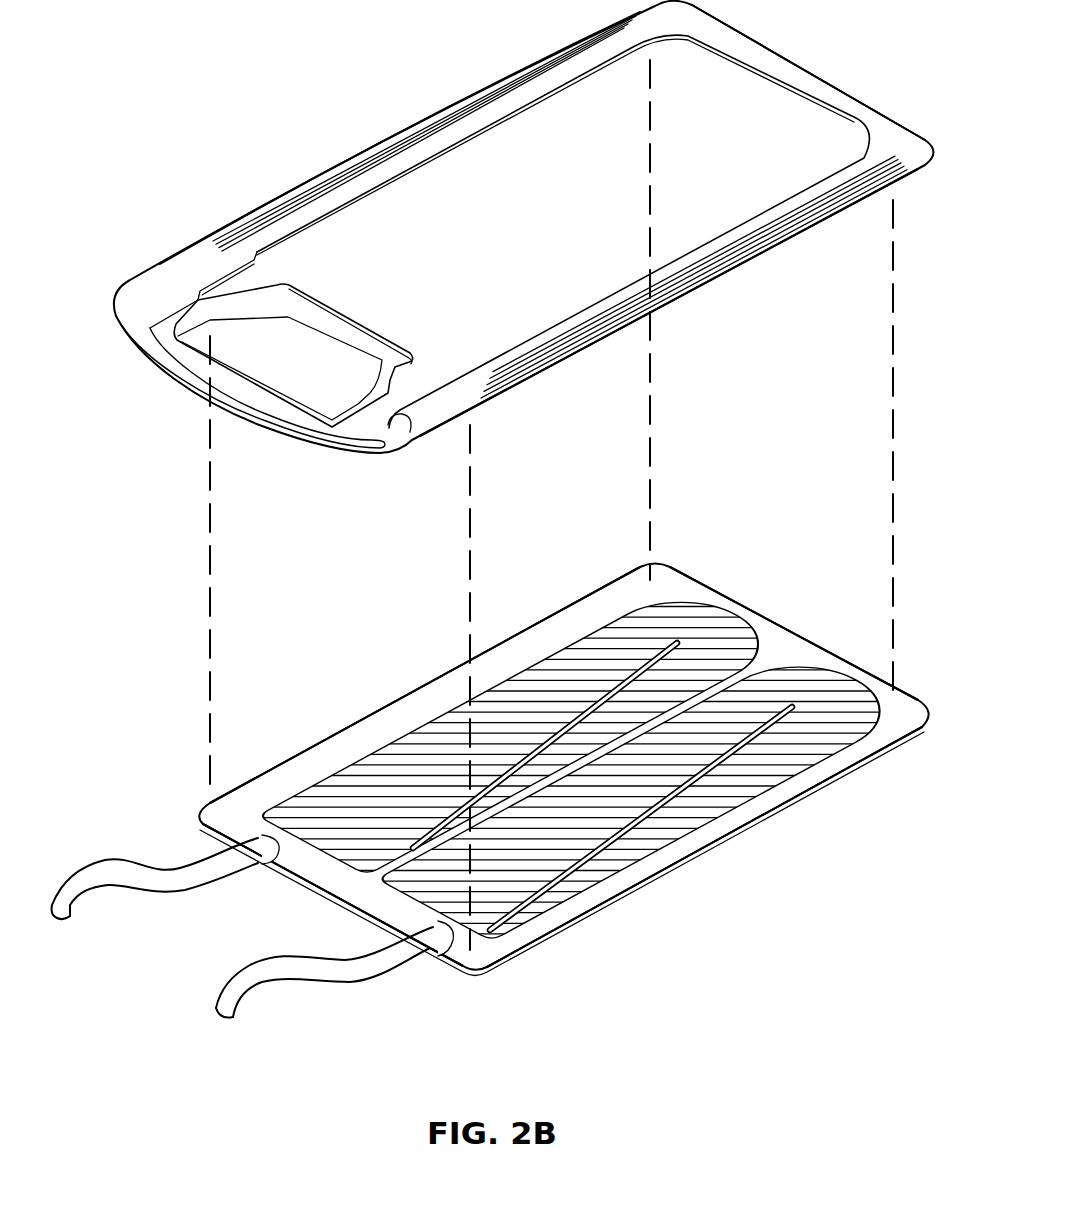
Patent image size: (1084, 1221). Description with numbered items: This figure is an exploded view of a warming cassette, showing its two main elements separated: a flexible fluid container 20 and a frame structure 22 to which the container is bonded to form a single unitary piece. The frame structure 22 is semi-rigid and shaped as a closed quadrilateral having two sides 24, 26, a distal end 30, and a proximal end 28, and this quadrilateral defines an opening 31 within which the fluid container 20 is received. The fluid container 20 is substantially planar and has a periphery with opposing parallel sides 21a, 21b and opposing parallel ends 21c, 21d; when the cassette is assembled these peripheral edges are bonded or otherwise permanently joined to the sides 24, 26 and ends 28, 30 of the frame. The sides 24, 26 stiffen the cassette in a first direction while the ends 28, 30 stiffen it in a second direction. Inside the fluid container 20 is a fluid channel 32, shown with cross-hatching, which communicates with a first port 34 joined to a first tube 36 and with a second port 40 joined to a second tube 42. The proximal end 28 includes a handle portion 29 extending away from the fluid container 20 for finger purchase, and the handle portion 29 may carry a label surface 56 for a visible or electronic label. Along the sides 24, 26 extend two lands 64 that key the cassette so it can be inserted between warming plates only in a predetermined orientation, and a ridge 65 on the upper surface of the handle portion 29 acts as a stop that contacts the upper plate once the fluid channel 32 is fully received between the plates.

The fluid container 20 is at (836, 801).
The side of fluid container periphery 21a is at (705, 848).
The side of fluid container periphery 21b is at (416, 690).
The end of fluid container periphery 21c is at (345, 906).
The end of fluid container periphery 21d is at (790, 618).
The frame structure 22 is at (846, 61).
The side of frame structure 24 is at (752, 258).
The side of frame structure 26 is at (310, 182).
The proximal end 28 is at (385, 424).
The handle portion 29 is at (162, 375).
The distal end 30 is at (752, 42).
The opening 31 is at (552, 126).
The fluid channel 32 is at (565, 758).
The first port 34 is at (277, 850).
The first tube 36 is at (118, 877).
The second port 40 is at (453, 937).
The second tube 42 is at (317, 974).
The label surface 56 is at (293, 392).
The lands 64 is at (396, 134).
The ridge 65 is at (322, 320).